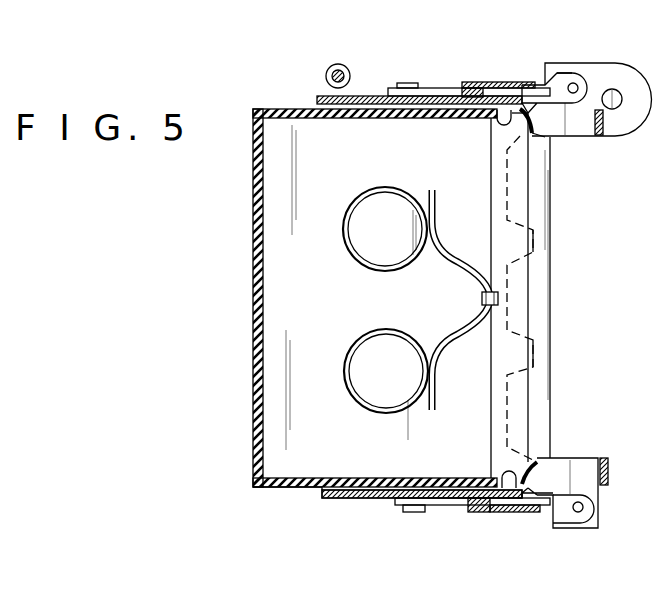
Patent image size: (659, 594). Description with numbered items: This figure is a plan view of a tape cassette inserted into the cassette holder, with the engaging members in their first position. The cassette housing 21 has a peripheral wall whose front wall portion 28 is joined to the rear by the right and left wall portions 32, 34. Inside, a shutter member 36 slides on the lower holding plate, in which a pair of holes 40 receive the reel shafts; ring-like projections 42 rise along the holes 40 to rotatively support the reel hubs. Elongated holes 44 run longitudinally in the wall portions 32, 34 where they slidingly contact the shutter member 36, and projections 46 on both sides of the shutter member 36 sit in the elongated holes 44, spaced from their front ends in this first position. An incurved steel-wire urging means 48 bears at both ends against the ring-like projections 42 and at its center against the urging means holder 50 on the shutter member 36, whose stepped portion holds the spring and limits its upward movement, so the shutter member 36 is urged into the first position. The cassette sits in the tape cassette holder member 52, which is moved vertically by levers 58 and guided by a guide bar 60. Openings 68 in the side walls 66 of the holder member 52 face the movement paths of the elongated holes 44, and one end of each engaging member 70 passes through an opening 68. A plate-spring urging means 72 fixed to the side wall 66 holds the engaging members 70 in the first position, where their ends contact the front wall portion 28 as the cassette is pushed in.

The housing 21 is at (370, 299).
The front wall portion 28 is at (552, 138).
The right wall portion 32 is at (278, 488).
The left wall portion 34 is at (291, 110).
The shutter member 36 is at (505, 432).
The holes 40 is at (366, 222).
The ring-like projections 42 is at (368, 192).
The elongated holes 44 is at (506, 107).
The projections 46 is at (497, 118).
The urging means 48 is at (462, 256).
The urging means holder 50 is at (482, 298).
The tape cassette holder member 52 is at (338, 499).
The levers 58 is at (445, 89).
The guide bar 60 is at (340, 64).
The side walls 66 is at (374, 96).
The openings 68 is at (320, 492).
The engaging members 70 is at (547, 87).
The urging means 72 is at (488, 83).